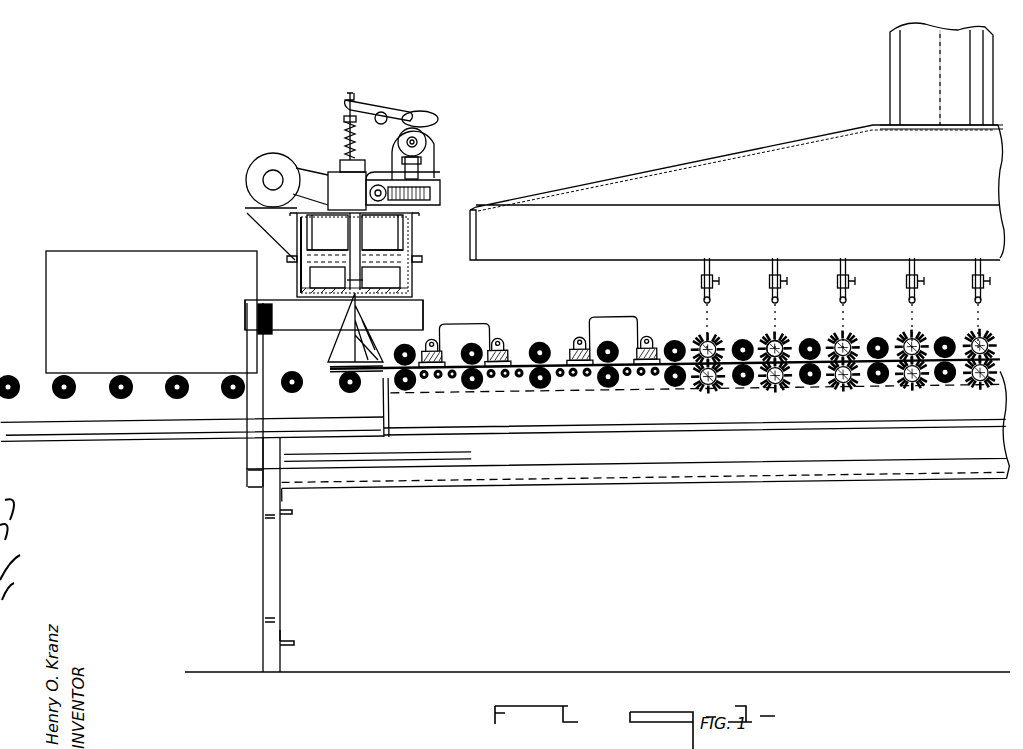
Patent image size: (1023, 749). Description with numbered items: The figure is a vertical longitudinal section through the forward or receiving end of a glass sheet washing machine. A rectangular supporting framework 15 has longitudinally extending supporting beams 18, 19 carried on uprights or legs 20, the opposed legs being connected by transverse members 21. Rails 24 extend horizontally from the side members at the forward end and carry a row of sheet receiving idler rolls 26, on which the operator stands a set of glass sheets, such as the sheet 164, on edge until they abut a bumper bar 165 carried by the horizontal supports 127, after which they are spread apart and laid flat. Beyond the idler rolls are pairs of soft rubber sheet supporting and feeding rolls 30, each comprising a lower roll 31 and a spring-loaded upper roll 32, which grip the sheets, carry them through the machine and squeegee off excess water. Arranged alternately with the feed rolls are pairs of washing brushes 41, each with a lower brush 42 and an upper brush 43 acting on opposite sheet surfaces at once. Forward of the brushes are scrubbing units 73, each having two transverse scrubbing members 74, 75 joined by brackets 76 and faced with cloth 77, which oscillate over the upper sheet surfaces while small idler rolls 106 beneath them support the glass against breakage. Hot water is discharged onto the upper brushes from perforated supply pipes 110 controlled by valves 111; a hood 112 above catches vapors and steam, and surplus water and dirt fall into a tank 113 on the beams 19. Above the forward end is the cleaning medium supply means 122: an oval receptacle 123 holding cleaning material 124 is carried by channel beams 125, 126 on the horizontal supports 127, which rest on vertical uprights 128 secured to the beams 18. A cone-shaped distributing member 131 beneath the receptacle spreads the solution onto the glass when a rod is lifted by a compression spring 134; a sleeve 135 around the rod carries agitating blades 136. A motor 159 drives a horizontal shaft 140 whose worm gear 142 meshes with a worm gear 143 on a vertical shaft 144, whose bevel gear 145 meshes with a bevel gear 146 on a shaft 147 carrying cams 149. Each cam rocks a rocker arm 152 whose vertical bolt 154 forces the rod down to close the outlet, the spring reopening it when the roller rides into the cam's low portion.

The supporting framework 15 is at (379, 497).
The supporting beam 18 is at (713, 472).
The supporting beam 19 is at (540, 468).
The leg 20 is at (280, 568).
The transverse member 21 is at (292, 513).
The rail 24 is at (160, 425).
The sheet receiving idler roll 26 is at (58, 398).
The sheet supporting and feeding rolls 30 is at (552, 345).
The lower roll 31 is at (540, 392).
The upper roll 32 is at (515, 370).
The washing brushes 41 is at (720, 329).
The lower brush 42 is at (714, 398).
The upper brush 43 is at (778, 340).
The scrubbing unit 73 is at (470, 314).
The scrubbing member 74 is at (428, 375).
The scrubbing member 75 is at (497, 375).
The bracket 76 is at (490, 335).
The cloth 77 is at (440, 382).
The idler roll 106 is at (587, 381).
The supply pipe 110 is at (972, 270).
The valve 111 is at (848, 282).
The hood 112 is at (695, 160).
The tank 113 is at (648, 428).
The cleaning medium supply means 122 is at (419, 230).
The receptacle 123 is at (300, 233).
The cleaning material 124 is at (310, 258).
The channel beam 125 is at (315, 270).
The channel beam 126 is at (400, 262).
The horizontal support 127 is at (420, 303).
The vertical upright 128 is at (258, 372).
The cone-shaped distributing member 131 is at (360, 362).
The compression spring 134 is at (343, 138).
The sleeve 135 is at (328, 232).
The agitating blades 136 is at (338, 304).
The horizontal shaft 140 is at (365, 187).
The worm gear 142 is at (380, 205).
The worm gear 143 is at (432, 192).
The vertical shaft 144 is at (420, 166).
The bevel gear 145 is at (426, 136).
The bevel gear 146 is at (422, 128).
The shaft 147 is at (356, 120).
The cam 149 is at (420, 112).
The rocker arm 152 is at (378, 100).
The vertical bolt 154 is at (347, 100).
The motor 159 is at (248, 178).
The glass sheet 164 is at (128, 252).
The bumper bar 165 is at (273, 318).